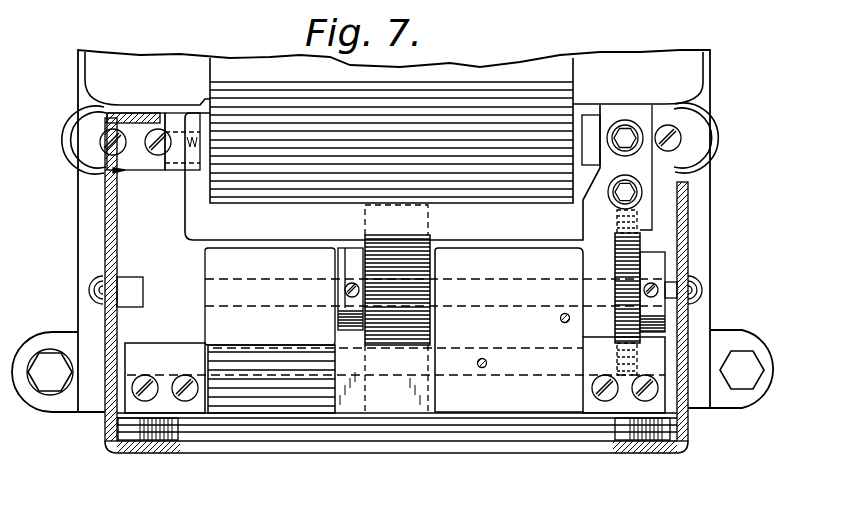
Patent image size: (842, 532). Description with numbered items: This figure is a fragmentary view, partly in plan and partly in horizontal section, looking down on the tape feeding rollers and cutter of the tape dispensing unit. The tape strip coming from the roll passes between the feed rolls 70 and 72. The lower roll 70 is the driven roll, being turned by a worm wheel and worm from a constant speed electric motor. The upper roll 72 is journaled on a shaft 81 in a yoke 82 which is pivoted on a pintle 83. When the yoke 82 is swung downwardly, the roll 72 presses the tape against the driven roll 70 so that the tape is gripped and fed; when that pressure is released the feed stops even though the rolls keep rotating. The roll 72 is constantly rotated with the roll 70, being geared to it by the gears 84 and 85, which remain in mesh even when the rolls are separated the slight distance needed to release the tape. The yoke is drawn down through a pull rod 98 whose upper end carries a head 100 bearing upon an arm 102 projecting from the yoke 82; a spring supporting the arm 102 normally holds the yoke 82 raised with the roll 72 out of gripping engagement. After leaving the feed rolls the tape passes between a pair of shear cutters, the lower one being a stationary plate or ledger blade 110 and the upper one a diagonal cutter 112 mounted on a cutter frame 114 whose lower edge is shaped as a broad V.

The feed roll 70 is at (432, 229).
The feed roll 72 is at (432, 271).
The shaft 81 is at (283, 305).
The yoke 82 is at (647, 221).
The pintle 83 is at (668, 368).
The gear 84 is at (630, 248).
The gear 85 is at (668, 360).
The pull rod 98 is at (647, 188).
The head 100 is at (628, 192).
The arm 102 is at (640, 163).
The ledger blade 110 is at (377, 412).
The diagonal cutter 112 is at (448, 415).
The cutter frame 114 is at (203, 408).